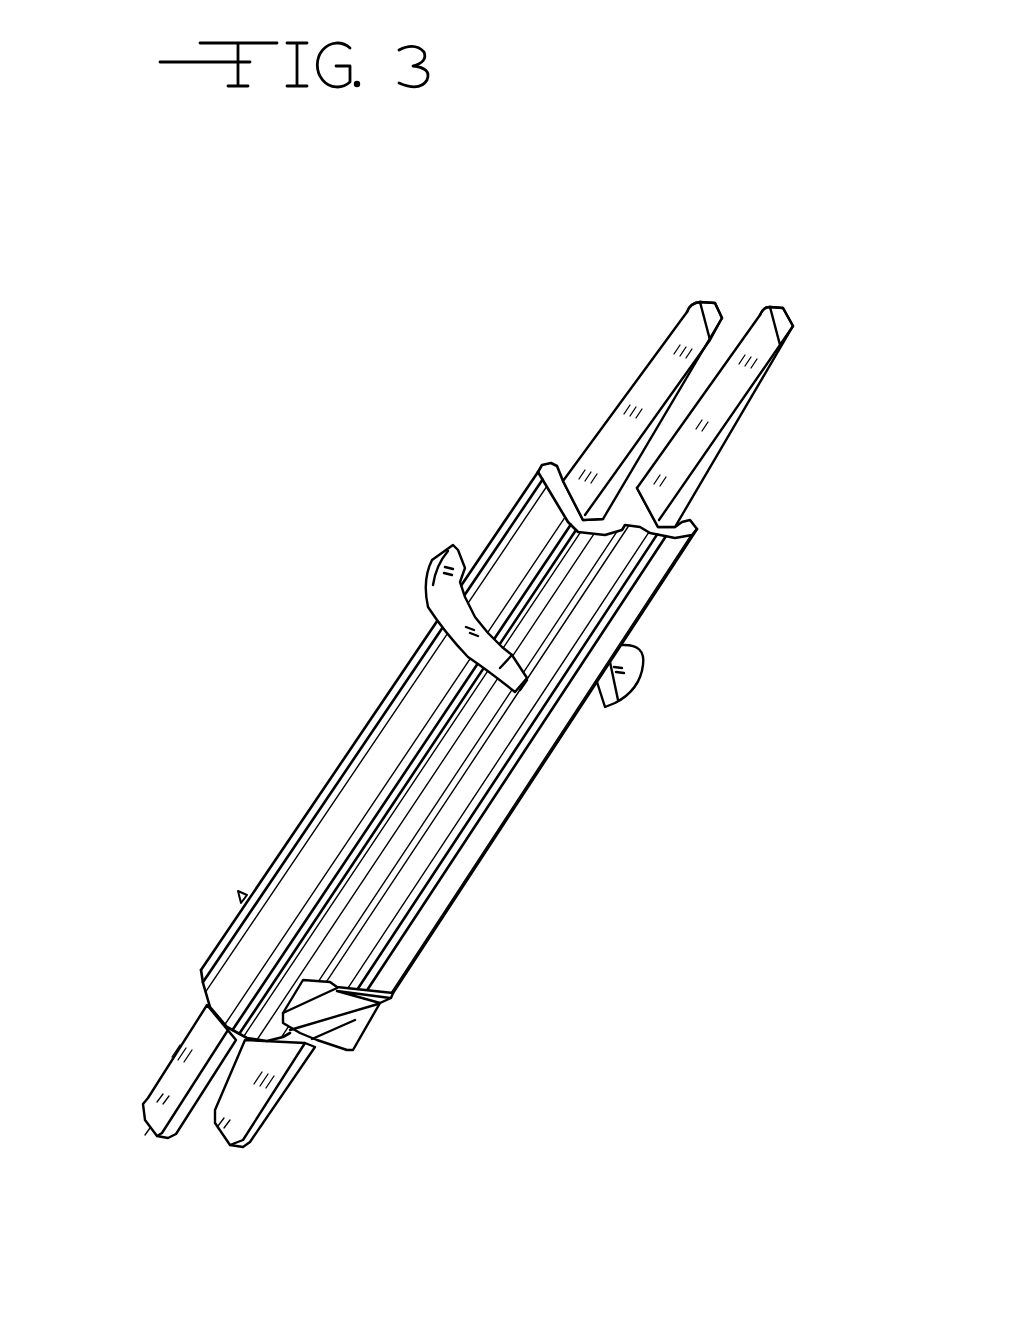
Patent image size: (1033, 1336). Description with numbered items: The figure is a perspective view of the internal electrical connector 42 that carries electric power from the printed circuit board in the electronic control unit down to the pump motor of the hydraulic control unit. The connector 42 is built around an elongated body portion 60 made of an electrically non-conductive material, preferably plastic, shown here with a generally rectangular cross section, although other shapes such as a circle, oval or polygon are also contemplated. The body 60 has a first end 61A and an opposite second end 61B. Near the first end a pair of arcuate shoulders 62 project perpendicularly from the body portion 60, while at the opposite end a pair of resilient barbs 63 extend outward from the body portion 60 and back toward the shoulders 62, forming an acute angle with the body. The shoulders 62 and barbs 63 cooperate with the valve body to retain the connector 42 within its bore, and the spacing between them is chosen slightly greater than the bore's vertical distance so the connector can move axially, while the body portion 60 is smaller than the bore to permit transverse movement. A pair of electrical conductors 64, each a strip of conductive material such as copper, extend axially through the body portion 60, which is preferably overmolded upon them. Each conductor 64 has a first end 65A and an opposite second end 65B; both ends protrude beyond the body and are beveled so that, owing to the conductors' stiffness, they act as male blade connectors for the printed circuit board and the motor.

The internal electrical connector 42 is at (745, 467).
The body portion 60 is at (497, 803).
The first end 61A is at (537, 510).
The second end 61B is at (222, 973).
The shoulders 62 is at (634, 658).
The resilient barbs 63 is at (242, 898).
The electrical conductors 64 is at (721, 387).
The first end 65A is at (690, 325).
The second end 65B is at (177, 1088).